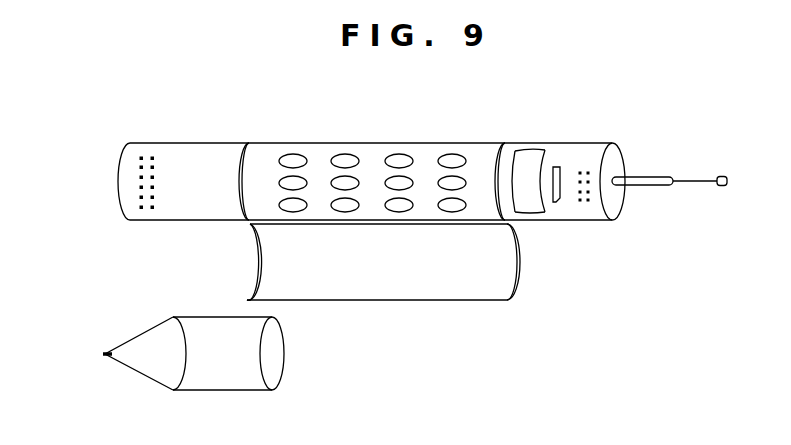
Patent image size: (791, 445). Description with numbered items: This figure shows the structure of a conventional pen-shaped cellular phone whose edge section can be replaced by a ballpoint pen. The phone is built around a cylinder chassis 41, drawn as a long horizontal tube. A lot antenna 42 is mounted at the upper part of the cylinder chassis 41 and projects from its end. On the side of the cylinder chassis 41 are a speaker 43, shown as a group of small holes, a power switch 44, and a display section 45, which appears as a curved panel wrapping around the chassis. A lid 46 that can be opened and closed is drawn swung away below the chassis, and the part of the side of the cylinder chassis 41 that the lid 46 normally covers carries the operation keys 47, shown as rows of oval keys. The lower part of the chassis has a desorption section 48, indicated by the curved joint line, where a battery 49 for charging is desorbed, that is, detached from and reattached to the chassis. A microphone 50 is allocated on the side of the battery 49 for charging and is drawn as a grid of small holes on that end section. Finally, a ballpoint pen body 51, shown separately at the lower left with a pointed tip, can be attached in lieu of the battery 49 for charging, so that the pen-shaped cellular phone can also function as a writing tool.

The cylinder chassis 41 is at (523, 143).
The lot antenna 42 is at (692, 178).
The speaker 43 is at (587, 171).
The power switch 44 is at (560, 200).
The display section 45 is at (530, 207).
The lid 46 is at (398, 285).
The operation keys 47 is at (399, 154).
The desorption section 48 is at (247, 143).
The battery for charging 49 is at (217, 205).
The microphone 50 is at (142, 208).
The ballpoint pen body 51 is at (225, 378).